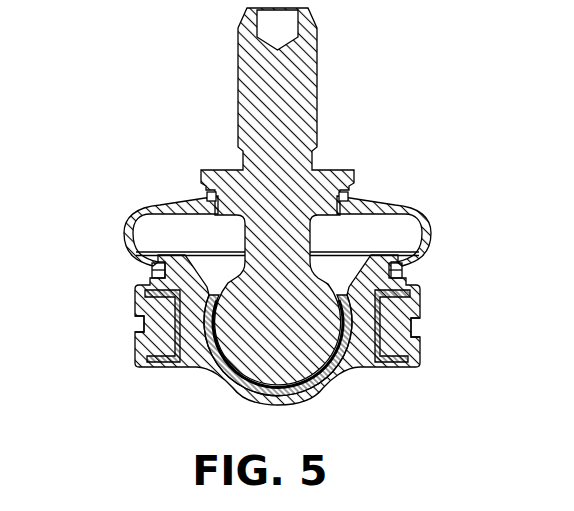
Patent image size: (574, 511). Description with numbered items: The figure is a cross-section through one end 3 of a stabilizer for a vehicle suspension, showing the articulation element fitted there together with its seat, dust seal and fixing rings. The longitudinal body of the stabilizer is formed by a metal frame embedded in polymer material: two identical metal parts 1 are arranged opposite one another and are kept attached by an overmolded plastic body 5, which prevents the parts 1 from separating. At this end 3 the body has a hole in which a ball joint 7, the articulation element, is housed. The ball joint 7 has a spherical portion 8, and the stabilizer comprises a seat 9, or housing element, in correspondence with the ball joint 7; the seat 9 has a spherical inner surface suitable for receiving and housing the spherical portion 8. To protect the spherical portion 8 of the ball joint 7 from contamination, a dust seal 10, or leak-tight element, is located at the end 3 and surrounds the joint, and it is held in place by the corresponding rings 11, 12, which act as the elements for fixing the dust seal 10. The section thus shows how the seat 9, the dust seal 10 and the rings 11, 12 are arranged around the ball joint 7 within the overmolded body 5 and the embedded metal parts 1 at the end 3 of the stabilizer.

The metal part 1 is at (386, 322).
The end 3 is at (384, 293).
The overmolded plastic body 5 is at (352, 358).
The ball joint 7 is at (318, 153).
The spherical portion 8 is at (325, 385).
The seat 9 is at (236, 377).
The dust seal 10 is at (423, 226).
The ring 11 is at (402, 270).
The ring 12 is at (352, 189).